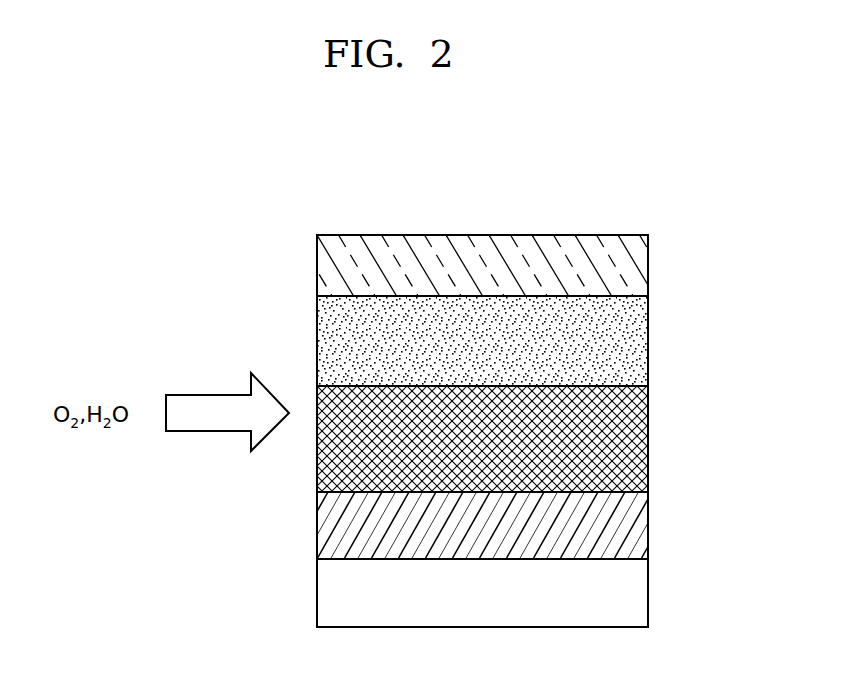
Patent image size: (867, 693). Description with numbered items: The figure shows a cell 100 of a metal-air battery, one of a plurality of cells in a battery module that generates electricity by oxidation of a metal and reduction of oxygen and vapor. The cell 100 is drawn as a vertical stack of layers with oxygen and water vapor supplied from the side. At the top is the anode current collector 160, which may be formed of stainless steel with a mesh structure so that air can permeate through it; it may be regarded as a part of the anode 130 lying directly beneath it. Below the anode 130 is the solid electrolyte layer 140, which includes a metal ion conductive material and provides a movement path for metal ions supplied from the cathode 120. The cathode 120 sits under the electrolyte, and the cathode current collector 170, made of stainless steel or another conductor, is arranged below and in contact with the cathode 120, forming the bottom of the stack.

The cell 100 is at (675, 217).
The anode current collector 160 is at (648, 268).
The anode 130 is at (648, 342).
The solid electrolyte layer 140 is at (648, 440).
The cathode 120 is at (648, 527).
The cathode current collector 170 is at (648, 594).